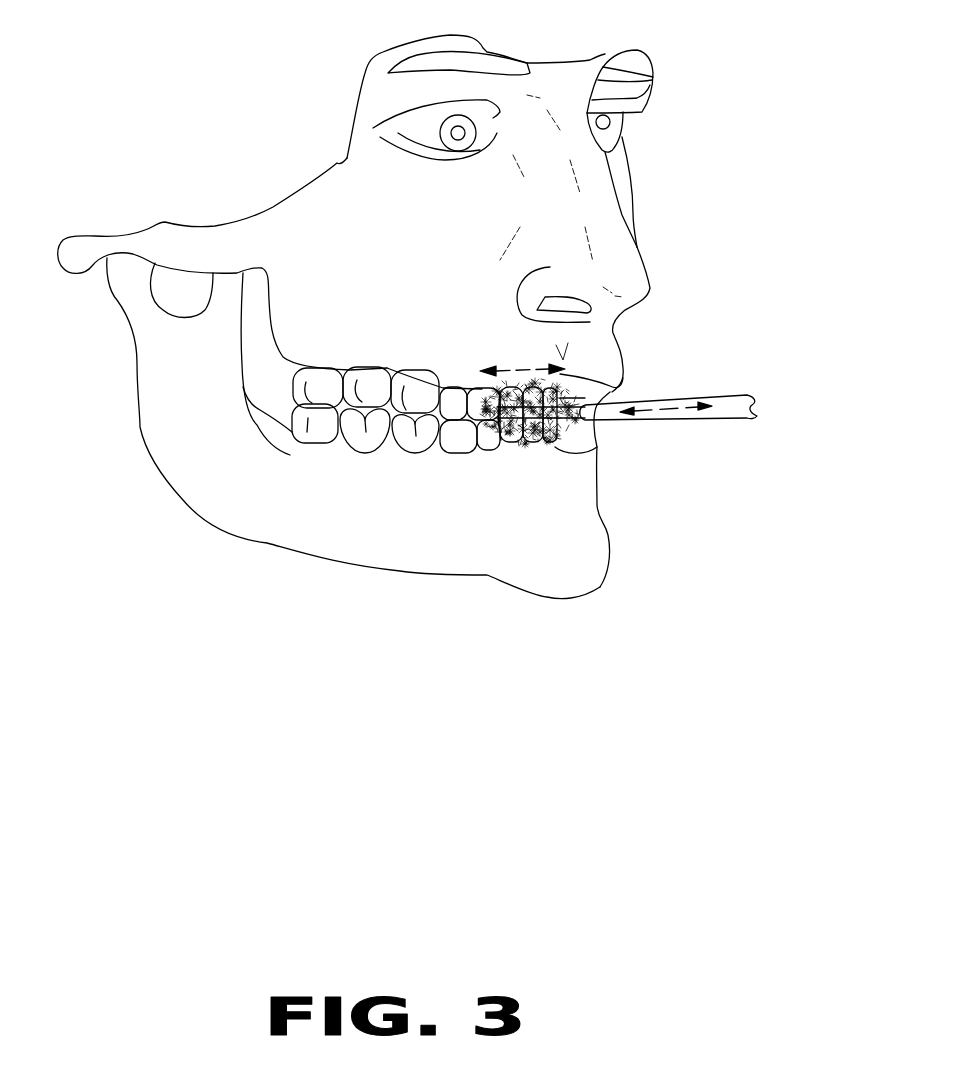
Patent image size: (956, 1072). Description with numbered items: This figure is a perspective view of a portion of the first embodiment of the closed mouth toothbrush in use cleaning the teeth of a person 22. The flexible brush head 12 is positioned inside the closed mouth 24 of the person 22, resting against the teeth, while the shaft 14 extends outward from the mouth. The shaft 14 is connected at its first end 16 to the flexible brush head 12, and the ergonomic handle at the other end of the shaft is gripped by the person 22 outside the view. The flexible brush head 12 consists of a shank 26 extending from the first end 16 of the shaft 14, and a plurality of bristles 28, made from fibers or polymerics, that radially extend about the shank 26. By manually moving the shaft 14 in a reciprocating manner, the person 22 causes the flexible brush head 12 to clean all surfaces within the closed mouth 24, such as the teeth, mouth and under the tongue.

The flexible brush head 12 is at (526, 512).
The shaft 14 is at (676, 356).
The first end 16 is at (599, 448).
The person 22 is at (222, 252).
The closed mouth 24 is at (637, 337).
The shank 26 is at (590, 464).
The plurality of bristles 28 is at (465, 514).